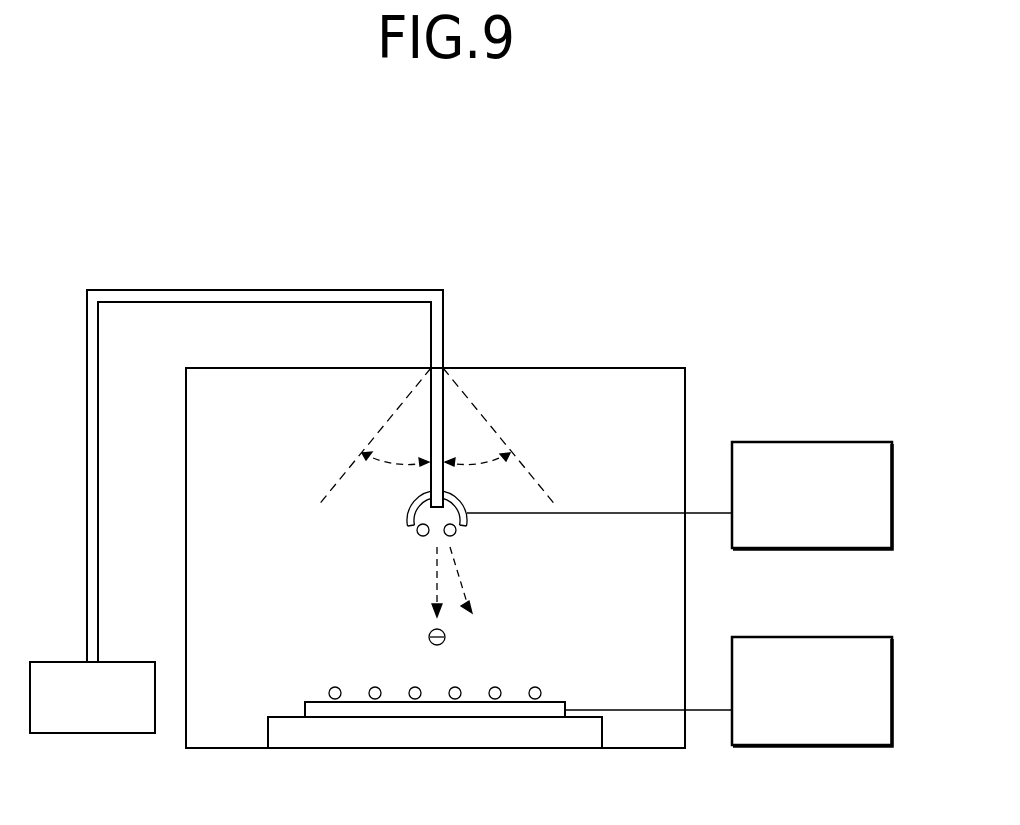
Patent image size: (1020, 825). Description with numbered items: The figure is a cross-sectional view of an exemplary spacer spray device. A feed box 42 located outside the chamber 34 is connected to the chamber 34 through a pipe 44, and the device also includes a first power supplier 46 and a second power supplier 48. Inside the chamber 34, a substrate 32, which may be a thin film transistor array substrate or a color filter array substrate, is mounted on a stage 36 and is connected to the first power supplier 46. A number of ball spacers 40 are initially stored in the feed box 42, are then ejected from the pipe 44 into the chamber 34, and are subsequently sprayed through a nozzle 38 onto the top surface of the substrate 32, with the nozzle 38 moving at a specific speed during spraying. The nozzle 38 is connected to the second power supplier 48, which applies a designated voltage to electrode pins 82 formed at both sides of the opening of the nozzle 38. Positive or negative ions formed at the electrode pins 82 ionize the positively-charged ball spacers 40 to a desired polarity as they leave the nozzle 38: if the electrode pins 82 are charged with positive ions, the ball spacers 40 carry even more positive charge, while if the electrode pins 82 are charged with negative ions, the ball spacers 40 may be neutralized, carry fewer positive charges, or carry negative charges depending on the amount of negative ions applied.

The substrate 32 is at (566, 702).
The chamber 34 is at (685, 368).
The stage 36 is at (602, 732).
The nozzle 38 is at (444, 483).
The ball spacers 40 is at (445, 637).
The feed box 42 is at (92, 735).
The pipe 44 is at (98, 510).
The first power supplier 46 is at (797, 637).
The second power supplier 48 is at (797, 442).
The electrode pins 82 is at (408, 525).